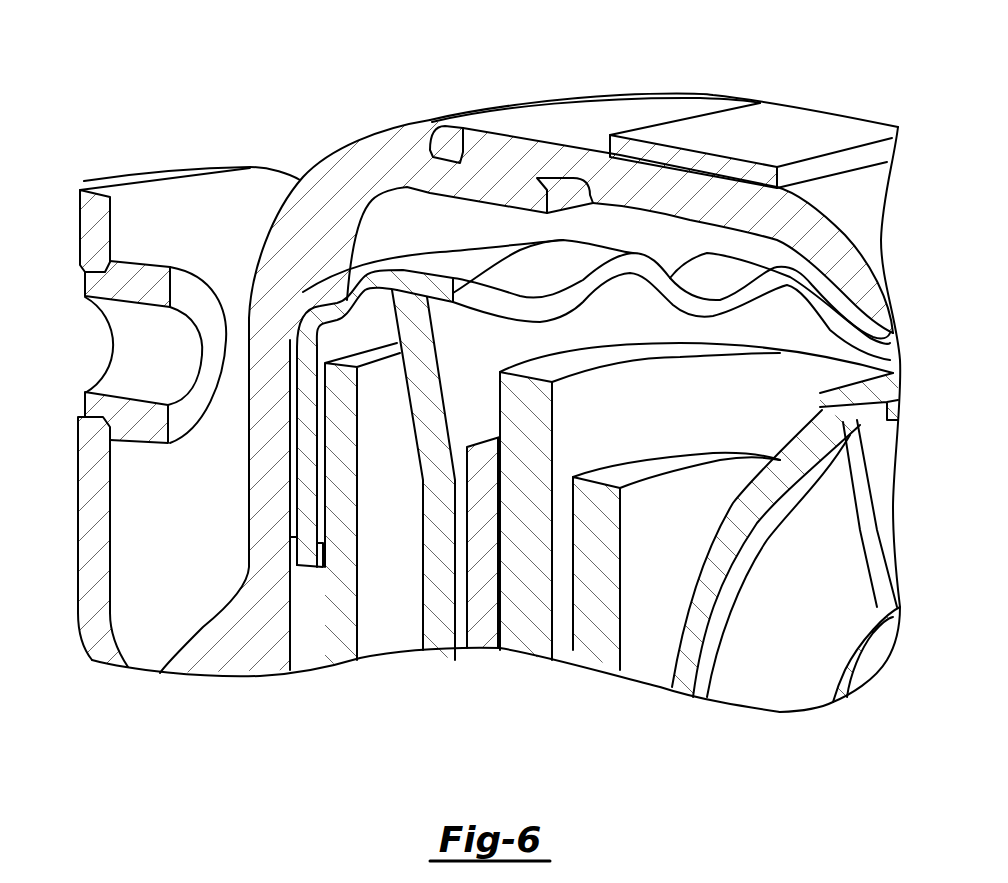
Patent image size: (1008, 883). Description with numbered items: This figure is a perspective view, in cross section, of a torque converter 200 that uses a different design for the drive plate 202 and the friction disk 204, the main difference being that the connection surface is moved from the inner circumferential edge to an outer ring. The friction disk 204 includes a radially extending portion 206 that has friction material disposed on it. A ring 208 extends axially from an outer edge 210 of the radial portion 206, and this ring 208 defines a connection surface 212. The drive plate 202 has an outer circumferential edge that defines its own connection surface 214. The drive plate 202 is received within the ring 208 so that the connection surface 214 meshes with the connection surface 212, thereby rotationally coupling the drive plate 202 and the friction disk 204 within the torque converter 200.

The torque converter 200 is at (754, 78).
The drive plate 202 is at (440, 537).
The friction disk 204 is at (300, 322).
The radially extending portion 206 is at (310, 487).
The ring 208 is at (453, 293).
The outer edge 210 is at (322, 317).
The connection surface 212 is at (708, 313).
The connection surface 214 is at (415, 312).